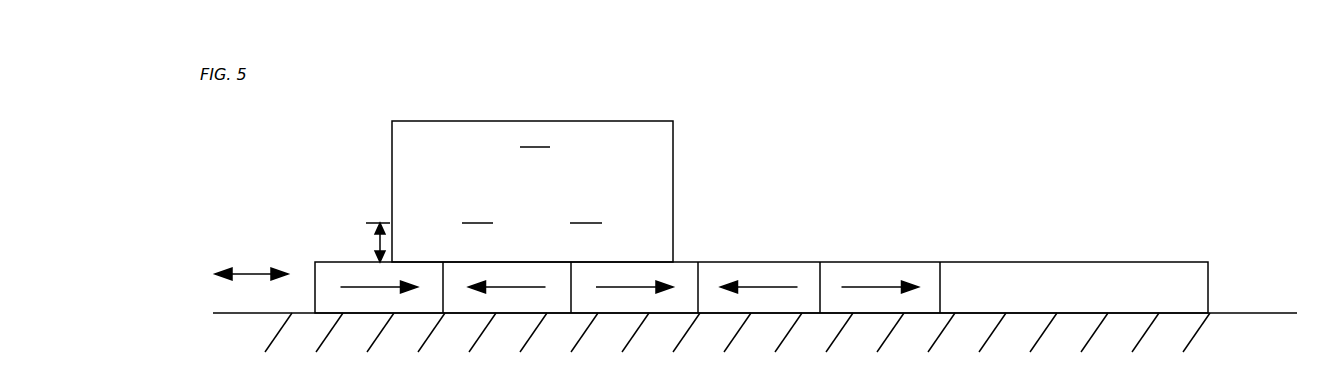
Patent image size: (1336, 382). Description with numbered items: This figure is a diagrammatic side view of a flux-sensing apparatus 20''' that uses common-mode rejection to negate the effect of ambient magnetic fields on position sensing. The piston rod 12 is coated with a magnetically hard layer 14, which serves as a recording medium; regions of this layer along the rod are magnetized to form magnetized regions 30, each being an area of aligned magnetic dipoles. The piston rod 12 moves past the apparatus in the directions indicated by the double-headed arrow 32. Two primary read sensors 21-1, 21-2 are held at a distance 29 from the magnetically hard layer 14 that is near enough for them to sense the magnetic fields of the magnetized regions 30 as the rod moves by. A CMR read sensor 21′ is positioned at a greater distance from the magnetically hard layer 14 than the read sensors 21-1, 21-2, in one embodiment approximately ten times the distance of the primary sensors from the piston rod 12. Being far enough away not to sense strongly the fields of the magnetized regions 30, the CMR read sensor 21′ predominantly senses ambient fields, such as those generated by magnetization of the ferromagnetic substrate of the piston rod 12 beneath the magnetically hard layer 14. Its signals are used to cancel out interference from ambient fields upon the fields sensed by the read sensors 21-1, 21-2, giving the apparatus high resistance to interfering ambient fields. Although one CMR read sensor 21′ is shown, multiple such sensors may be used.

The piston rod 12 is at (1227, 313).
The magnetically hard layer 14 is at (1157, 262).
The magnetized regions 30 is at (328, 262).
The flux-sensing apparatus 20''' is at (573, 180).
The CMR read sensor 21′ is at (535, 147).
The read sensor 21-1 is at (480, 223).
The read sensor 21-2 is at (580, 223).
The distance 29 is at (367, 237).
The double-headed arrow 32 is at (250, 270).